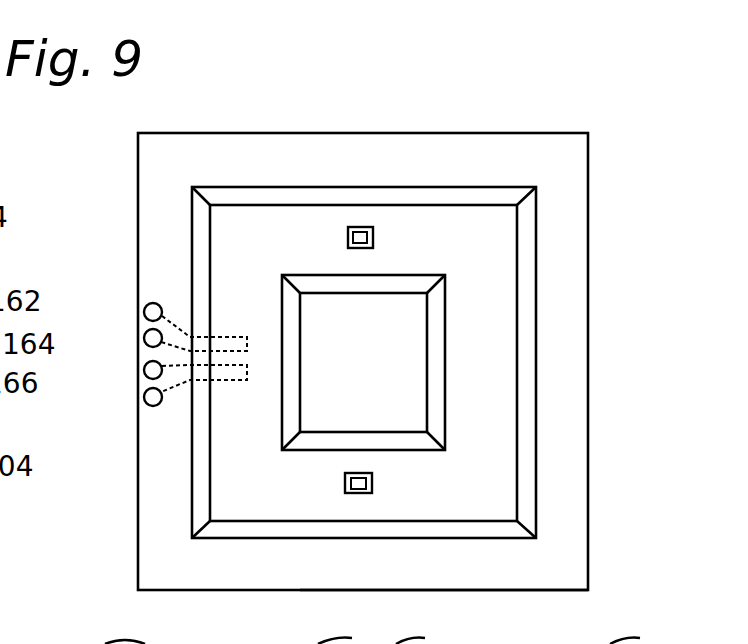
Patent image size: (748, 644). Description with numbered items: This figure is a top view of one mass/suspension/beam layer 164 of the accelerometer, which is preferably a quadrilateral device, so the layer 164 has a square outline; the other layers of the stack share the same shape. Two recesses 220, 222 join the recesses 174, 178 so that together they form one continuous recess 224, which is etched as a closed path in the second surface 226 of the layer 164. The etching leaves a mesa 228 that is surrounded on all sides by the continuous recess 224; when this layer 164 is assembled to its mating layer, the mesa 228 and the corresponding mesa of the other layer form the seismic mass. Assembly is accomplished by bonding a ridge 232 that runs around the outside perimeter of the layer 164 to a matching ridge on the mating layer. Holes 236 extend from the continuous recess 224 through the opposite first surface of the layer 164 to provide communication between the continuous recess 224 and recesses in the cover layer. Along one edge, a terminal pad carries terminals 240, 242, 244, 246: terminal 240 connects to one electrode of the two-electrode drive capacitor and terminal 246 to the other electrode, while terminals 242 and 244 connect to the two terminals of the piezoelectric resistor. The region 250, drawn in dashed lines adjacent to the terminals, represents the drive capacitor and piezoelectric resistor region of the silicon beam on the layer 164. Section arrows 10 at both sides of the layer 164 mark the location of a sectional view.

The section line 10- 10 is at (113, 404).
The first mass/suspension/beam layer 164 is at (568, 222).
The recess 174 is at (468, 427).
The recess 178 is at (235, 425).
The recess 220 is at (468, 490).
The recess 222 is at (278, 240).
The continuous recess 224 is at (473, 242).
The second surface 226 is at (400, 332).
The mesa 228 is at (467, 590).
The ridge 232 is at (345, 133).
The holes 236 is at (362, 228).
The terminal 240 is at (147, 305).
The terminal 242 is at (145, 333).
The terminal 244 is at (146, 378).
The terminal 246 is at (146, 404).
The drive capacitor/piezoelectric resistor region 250 is at (221, 350).